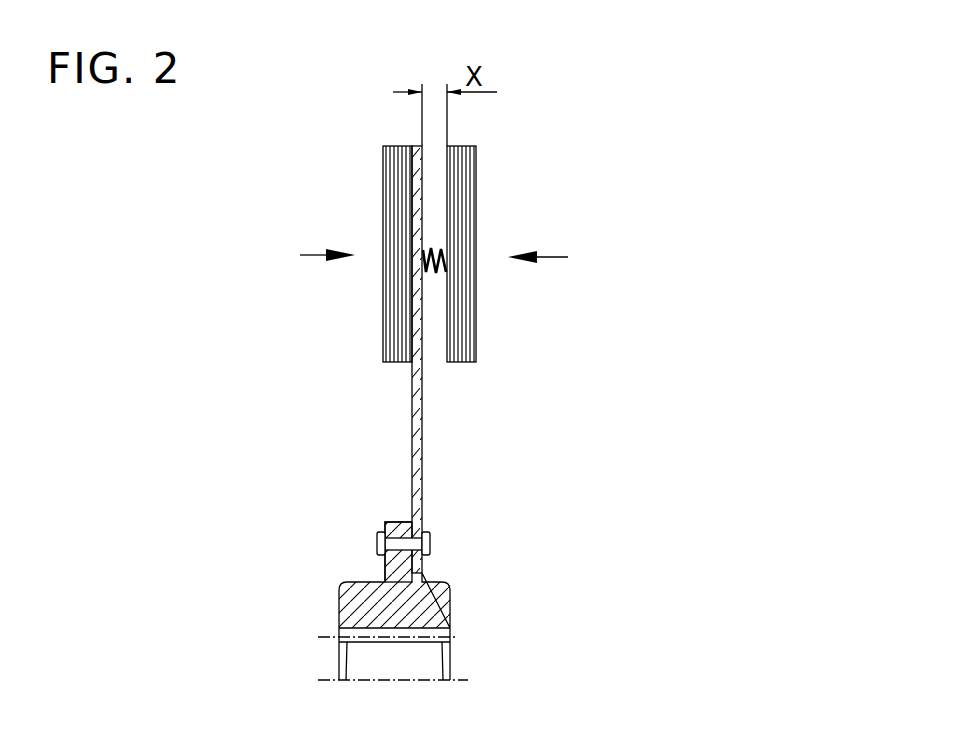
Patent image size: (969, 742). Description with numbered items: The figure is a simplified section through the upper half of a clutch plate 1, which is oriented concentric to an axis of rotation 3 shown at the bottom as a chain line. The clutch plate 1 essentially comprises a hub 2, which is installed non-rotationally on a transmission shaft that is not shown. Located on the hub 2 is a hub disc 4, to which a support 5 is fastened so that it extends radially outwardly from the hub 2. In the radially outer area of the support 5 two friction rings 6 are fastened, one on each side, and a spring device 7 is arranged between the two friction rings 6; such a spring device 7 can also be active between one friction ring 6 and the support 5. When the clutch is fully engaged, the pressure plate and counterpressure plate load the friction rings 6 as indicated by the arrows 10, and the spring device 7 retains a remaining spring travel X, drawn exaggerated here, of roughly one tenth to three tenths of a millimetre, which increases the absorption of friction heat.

The clutch plate 1 is at (718, 212).
The hub 2 is at (348, 598).
The axis of rotation 3 is at (458, 679).
The hub disc 4 is at (395, 526).
The support 5 is at (423, 407).
The friction ring 6 is at (394, 152).
The spring device 7 is at (438, 287).
The arrows 10 is at (430, 257).